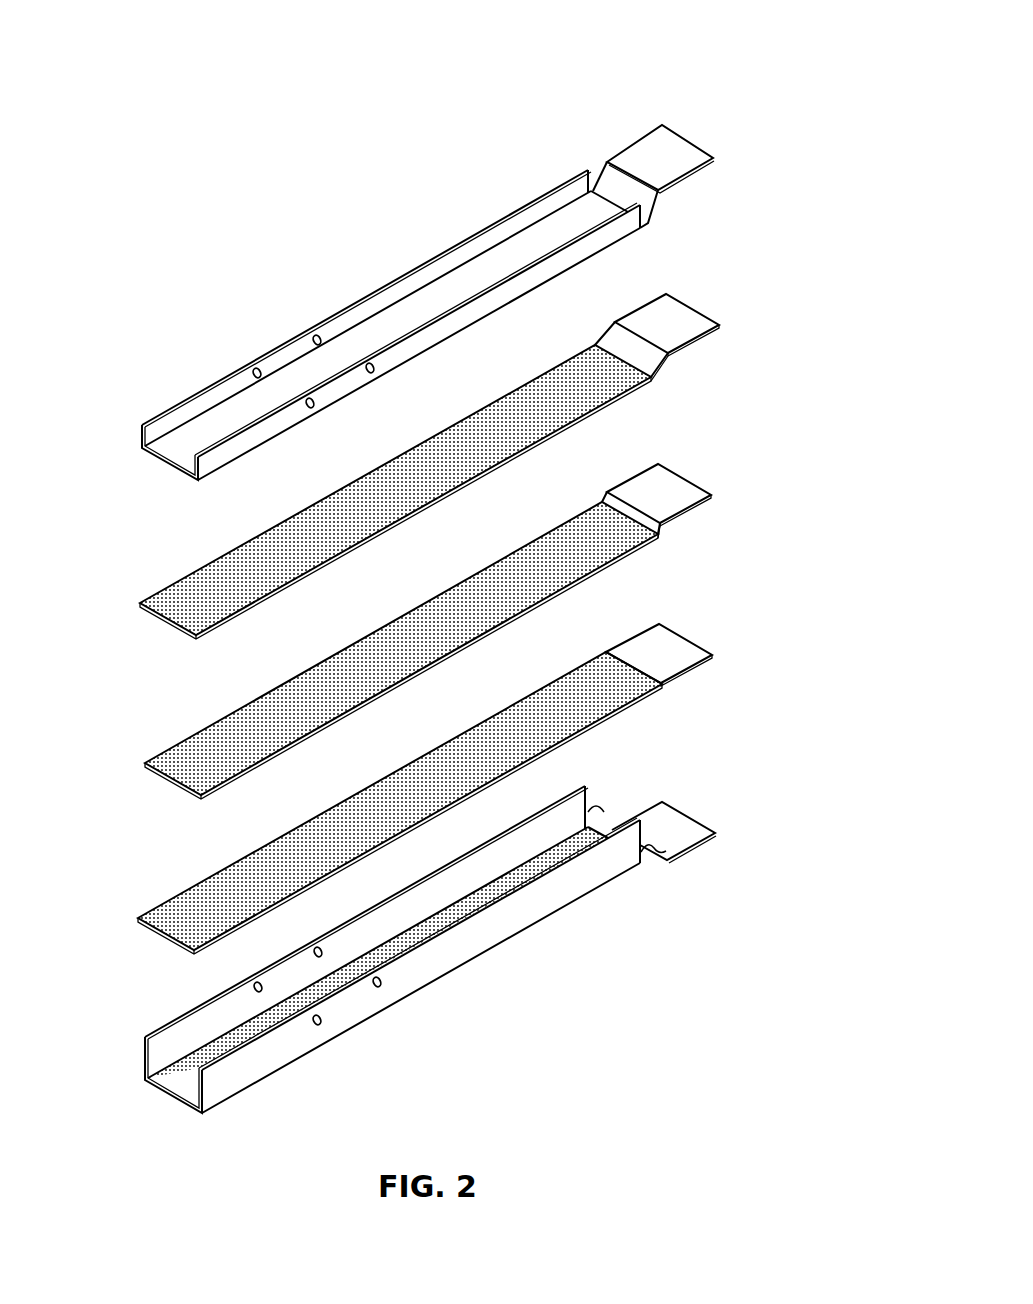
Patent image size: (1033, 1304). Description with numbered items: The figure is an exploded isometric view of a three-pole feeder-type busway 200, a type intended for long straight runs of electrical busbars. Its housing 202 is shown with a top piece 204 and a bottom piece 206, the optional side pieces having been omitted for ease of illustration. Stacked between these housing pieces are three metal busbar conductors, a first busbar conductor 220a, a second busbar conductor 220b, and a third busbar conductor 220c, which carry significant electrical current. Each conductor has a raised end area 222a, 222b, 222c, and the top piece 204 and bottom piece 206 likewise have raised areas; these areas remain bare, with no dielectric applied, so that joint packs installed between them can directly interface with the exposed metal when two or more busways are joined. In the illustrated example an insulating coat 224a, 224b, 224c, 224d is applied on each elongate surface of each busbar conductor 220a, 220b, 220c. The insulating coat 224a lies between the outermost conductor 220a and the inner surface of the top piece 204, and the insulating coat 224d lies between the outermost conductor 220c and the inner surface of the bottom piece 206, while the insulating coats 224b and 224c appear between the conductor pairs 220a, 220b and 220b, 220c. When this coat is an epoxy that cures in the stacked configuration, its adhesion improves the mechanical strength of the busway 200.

The busway 200 is at (665, 44).
The housing 202 is at (426, 602).
The top piece 204 is at (706, 162).
The bottom piece 206 is at (690, 856).
The first busbar conductor 220a is at (431, 427).
The second busbar conductor 220b is at (434, 589).
The third busbar conductor 220c is at (433, 746).
The raised area of first busbar conductor 222a is at (655, 317).
The raised area of second busbar conductor 222b is at (648, 483).
The raised area of third busbar conductor 222c is at (650, 642).
The insulating coat 224a is at (161, 602).
The insulating coat 224b is at (165, 758).
The insulating coat 224c is at (167, 915).
The insulating coat 224d is at (160, 1082).